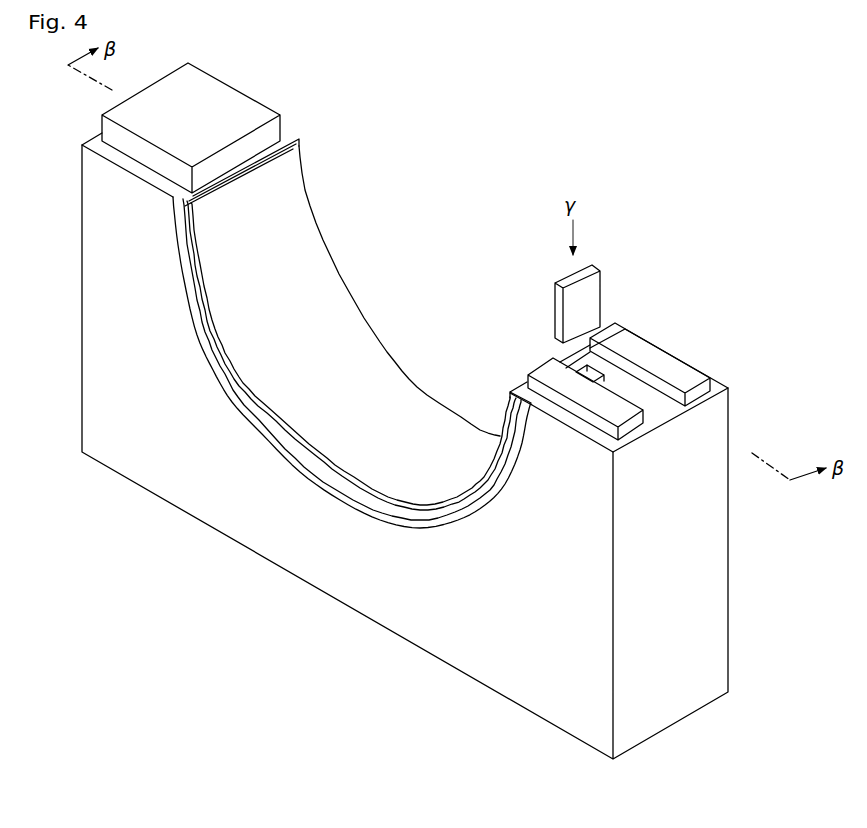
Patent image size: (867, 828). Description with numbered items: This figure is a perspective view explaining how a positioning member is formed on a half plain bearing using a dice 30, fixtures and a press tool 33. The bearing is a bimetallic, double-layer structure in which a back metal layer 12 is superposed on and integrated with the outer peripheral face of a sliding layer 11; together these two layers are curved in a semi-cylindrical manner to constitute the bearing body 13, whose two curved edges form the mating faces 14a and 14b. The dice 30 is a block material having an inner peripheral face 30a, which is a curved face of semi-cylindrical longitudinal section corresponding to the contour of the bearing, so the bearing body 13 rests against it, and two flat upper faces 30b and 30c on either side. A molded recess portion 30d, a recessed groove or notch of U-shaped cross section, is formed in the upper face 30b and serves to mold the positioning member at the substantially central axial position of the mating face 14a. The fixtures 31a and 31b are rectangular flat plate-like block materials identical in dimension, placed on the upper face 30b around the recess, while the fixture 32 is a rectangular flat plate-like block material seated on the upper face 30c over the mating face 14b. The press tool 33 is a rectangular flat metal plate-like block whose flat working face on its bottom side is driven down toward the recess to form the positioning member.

The dice 30 is at (728, 570).
The inner peripheral face 30a is at (421, 526).
The upper face 30b is at (713, 378).
The upper face 30c is at (90, 136).
The molded recess portion 30d is at (612, 367).
The bearing body 13 is at (319, 304).
The sliding layer 11 is at (225, 360).
The back metal layer 12 is at (203, 338).
The mating face 14a is at (517, 386).
The mating face 14b is at (290, 124).
The fixture 32 is at (208, 74).
The press tool 33 is at (602, 280).
The fixture 31a is at (585, 423).
The fixture 31b is at (653, 347).